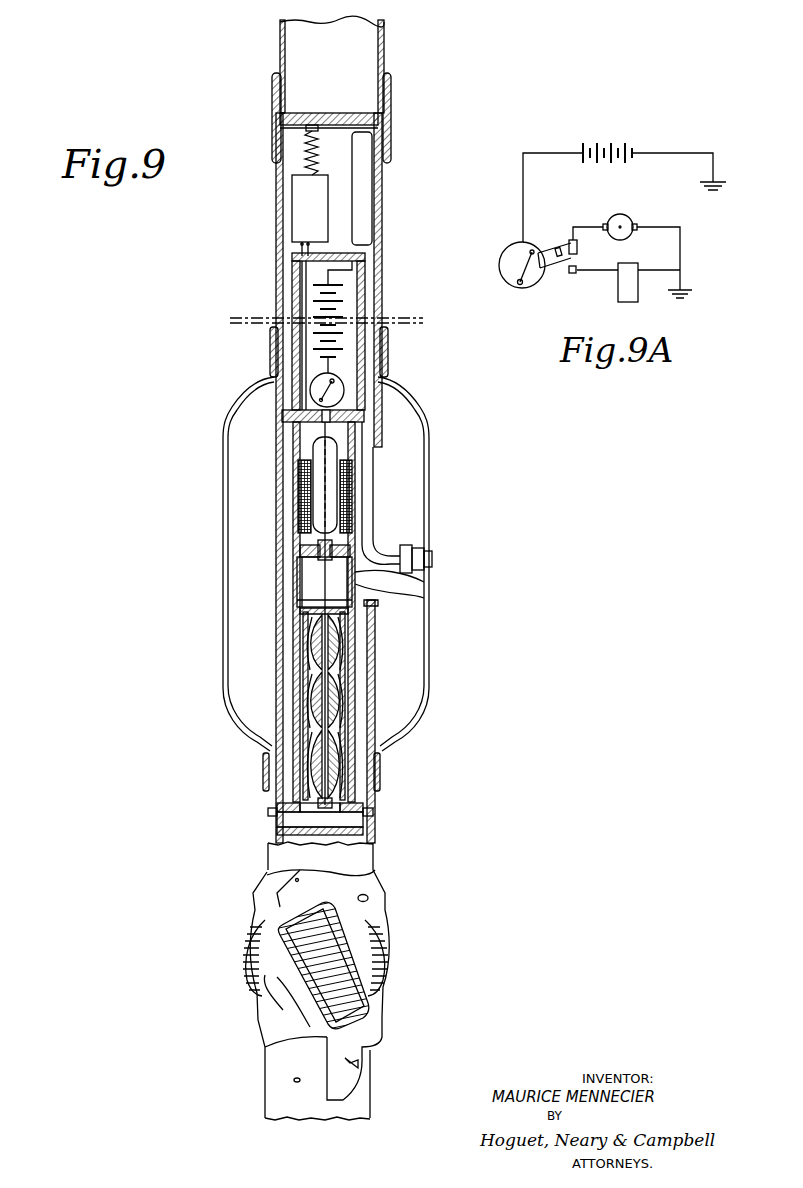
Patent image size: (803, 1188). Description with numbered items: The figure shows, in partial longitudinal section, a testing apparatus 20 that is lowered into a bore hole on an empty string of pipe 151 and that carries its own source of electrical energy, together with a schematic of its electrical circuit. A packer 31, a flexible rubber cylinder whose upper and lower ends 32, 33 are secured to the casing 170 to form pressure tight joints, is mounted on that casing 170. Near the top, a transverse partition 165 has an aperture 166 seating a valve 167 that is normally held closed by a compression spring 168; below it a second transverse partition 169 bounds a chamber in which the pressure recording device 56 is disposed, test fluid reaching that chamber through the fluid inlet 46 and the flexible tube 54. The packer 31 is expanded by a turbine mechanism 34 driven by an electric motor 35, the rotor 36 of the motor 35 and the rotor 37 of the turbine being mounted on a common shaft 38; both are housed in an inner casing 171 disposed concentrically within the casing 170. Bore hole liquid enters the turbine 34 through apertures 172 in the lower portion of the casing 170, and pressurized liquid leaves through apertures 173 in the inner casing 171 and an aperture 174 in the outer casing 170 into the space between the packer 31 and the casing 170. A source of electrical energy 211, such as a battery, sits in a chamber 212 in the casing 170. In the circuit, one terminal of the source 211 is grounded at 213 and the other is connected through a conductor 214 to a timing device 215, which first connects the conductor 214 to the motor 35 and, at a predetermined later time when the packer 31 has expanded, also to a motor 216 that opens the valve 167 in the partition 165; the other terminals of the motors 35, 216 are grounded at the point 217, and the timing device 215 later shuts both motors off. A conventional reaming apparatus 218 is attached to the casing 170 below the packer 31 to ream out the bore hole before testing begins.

In FIG. 9, the testing apparatus 20 is at (202, 386).
In FIG. 9, the packer 31 is at (223, 540).
In FIG. 9, the upper end of packer 32 is at (386, 344).
In FIG. 9, the lower end of packer 33 is at (379, 773).
In FIG. 9, the turbine mechanism 34 is at (306, 690).
In FIG. 9, the electric motor 35 is at (313, 445).
In FIG. 9A, the electric motor 35 is at (620, 214).
In FIG. 9, the rotor of the motor 36 is at (320, 477).
In FIG. 9, the rotor of the turbine mechanism 37 is at (316, 705).
In FIG. 9, the common shaft 38 is at (322, 592).
In FIG. 9, the fluid inlet 46 is at (420, 540).
In FIG. 9, the flexible tube 54 is at (368, 490).
In FIG. 9, the pressure recording device 56 is at (362, 190).
In FIG. 9, the string of pipe 151 is at (384, 50).
In FIG. 9, the transverse partition 165 is at (352, 116).
In FIG. 9, the aperture 166 is at (312, 113).
In FIG. 9, the valve 167 is at (307, 128).
In FIG. 9, the compression spring 168 is at (307, 157).
In FIG. 9, the second transverse partition 169 is at (292, 413).
In FIG. 9, the casing 170 is at (382, 293).
In FIG. 9, the inner casing 171 is at (356, 677).
In FIG. 9, the apertures 172 is at (268, 812).
In FIG. 9, the apertures 173 is at (297, 580).
In FIG. 9, the aperture 174 is at (427, 597).
In FIG. 9, the source of electrical energy 211 is at (315, 291).
In FIG. 9A, the source of electrical energy 211 is at (611, 142).
In FIG. 9, the chamber 212 is at (353, 267).
In FIG. 9A, the ground 213 is at (712, 183).
In FIG. 9A, the conductor 214 is at (538, 153).
In FIG. 9, the timing device 215 is at (341, 381).
In FIG. 9A, the timing device 215 is at (550, 234).
In FIG. 9, the motor 216 is at (305, 201).
In FIG. 9A, the motor 216 is at (618, 292).
In FIG. 9A, the ground point 217 is at (684, 290).
In FIG. 9, the reaming apparatus 218 is at (347, 921).